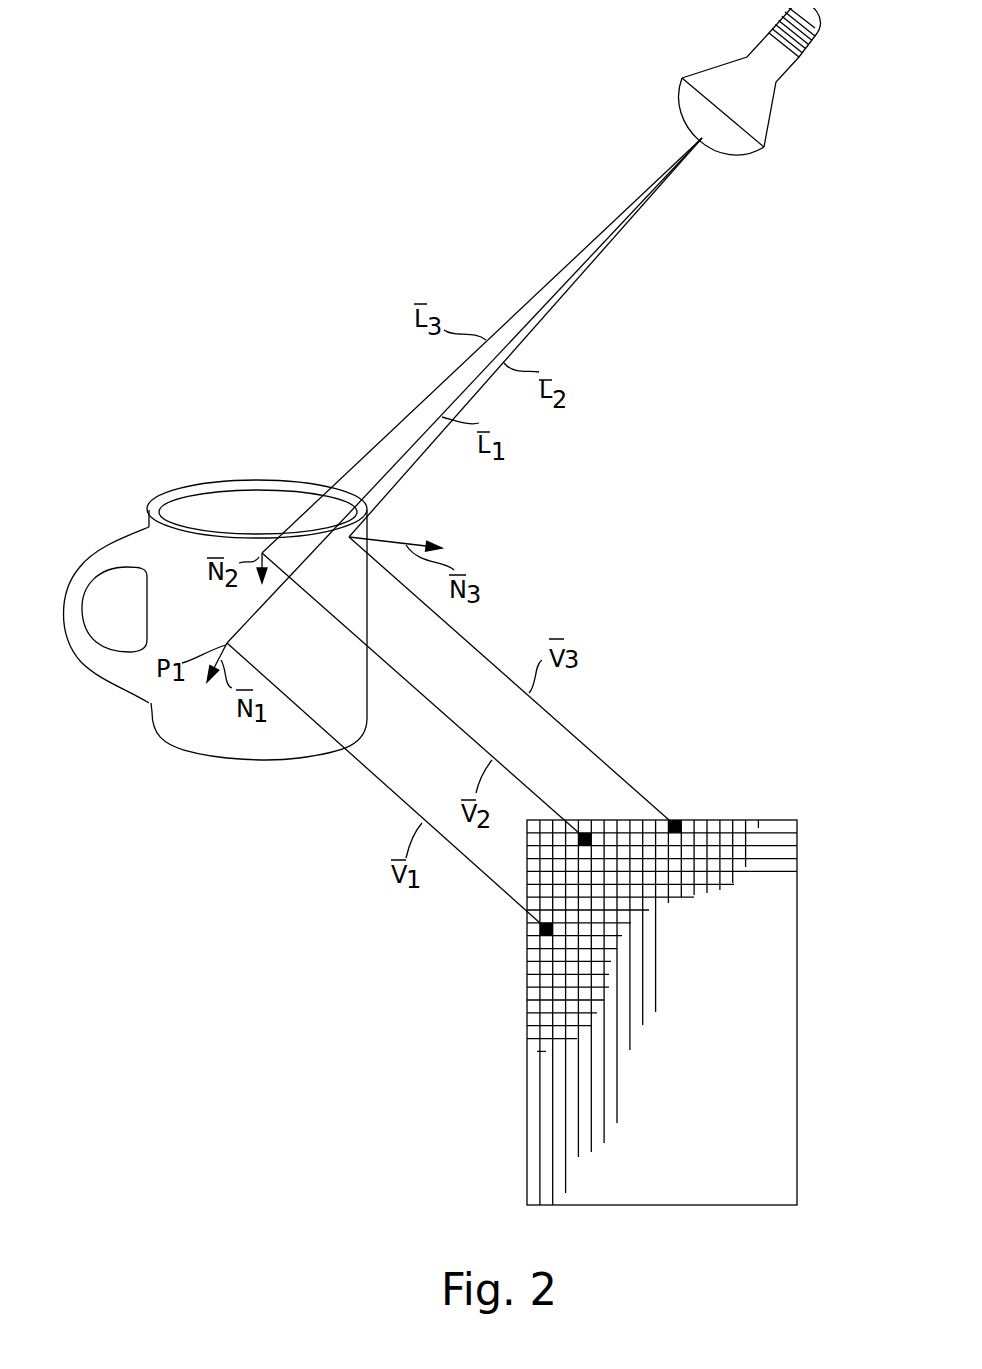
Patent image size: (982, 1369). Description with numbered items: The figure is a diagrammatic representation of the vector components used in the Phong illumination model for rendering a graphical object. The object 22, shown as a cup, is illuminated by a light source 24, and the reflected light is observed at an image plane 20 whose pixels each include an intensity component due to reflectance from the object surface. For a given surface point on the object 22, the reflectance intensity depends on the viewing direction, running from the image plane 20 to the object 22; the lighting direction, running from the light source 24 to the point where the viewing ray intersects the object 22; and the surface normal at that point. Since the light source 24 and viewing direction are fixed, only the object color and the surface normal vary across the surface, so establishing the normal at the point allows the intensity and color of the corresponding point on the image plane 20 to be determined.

The image plane 20 is at (767, 818).
The object 22 is at (235, 750).
The light source 24 is at (703, 70).